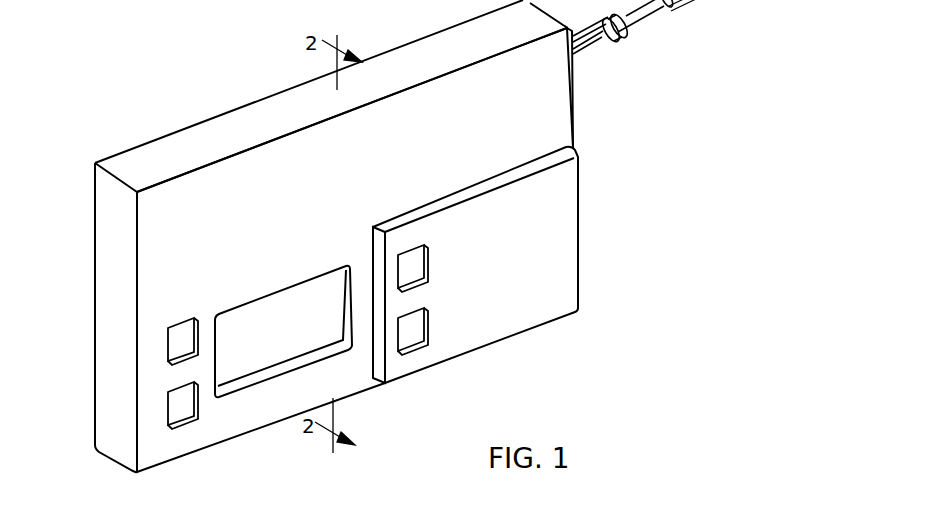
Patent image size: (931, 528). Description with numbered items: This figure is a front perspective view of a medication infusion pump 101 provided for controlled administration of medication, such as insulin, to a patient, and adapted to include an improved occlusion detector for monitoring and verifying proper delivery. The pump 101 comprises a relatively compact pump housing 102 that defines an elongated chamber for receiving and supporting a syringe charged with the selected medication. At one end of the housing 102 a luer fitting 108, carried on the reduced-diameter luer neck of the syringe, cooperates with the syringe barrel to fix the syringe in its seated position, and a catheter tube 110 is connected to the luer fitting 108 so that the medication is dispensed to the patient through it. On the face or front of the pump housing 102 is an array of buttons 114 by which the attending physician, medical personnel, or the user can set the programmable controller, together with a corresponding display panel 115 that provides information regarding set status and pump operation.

The medication infusion pump 101 is at (133, 118).
The pump housing 102 is at (545, 113).
The luer fitting 108 is at (600, 48).
The catheter tube 110 is at (693, 2).
The buttons 114 is at (166, 350).
The display panel 115 is at (243, 360).